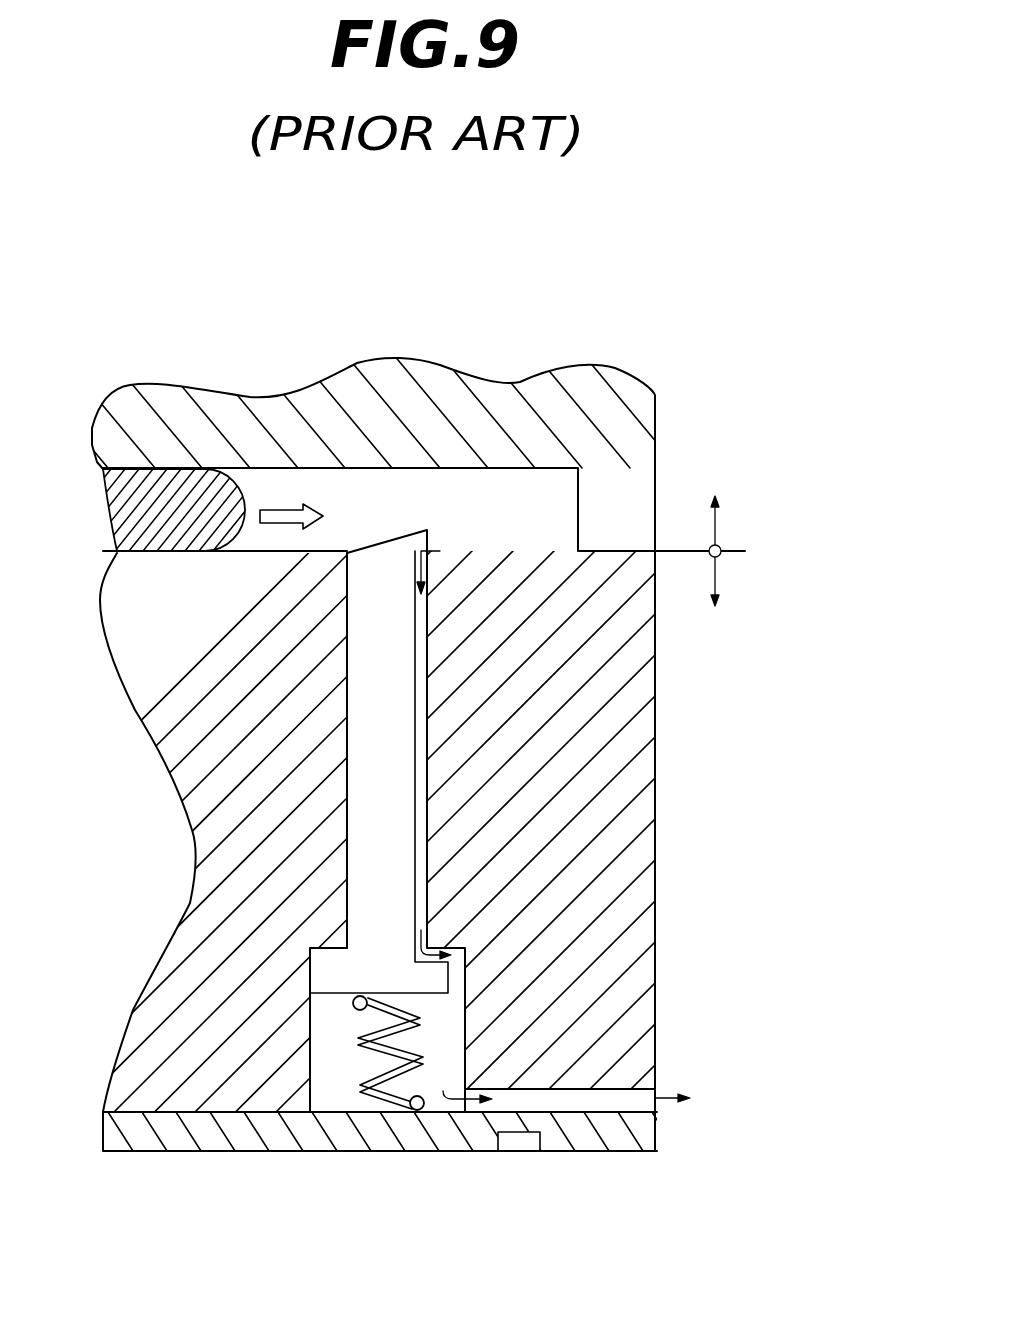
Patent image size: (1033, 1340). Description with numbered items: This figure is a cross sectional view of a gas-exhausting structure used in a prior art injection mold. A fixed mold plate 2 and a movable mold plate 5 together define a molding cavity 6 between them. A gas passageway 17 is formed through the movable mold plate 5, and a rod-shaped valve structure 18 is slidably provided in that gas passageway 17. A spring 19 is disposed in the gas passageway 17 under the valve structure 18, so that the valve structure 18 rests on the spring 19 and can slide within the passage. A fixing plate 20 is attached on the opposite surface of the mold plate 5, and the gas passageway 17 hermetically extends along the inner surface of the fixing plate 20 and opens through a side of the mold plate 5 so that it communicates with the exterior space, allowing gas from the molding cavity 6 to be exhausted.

The fixed mold plate 2 is at (655, 425).
The movable mold plate 5 is at (630, 683).
The molding cavity 6 is at (488, 500).
The gas passageway 17 is at (432, 822).
The rod-shaped valve structure 18 is at (402, 886).
The spring 19 is at (432, 1047).
The fixing plate 20 is at (593, 1137).